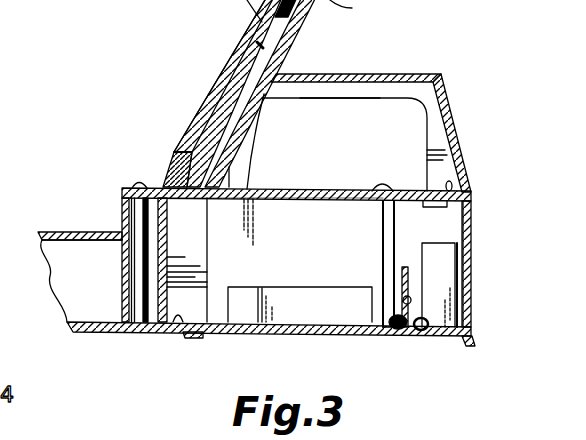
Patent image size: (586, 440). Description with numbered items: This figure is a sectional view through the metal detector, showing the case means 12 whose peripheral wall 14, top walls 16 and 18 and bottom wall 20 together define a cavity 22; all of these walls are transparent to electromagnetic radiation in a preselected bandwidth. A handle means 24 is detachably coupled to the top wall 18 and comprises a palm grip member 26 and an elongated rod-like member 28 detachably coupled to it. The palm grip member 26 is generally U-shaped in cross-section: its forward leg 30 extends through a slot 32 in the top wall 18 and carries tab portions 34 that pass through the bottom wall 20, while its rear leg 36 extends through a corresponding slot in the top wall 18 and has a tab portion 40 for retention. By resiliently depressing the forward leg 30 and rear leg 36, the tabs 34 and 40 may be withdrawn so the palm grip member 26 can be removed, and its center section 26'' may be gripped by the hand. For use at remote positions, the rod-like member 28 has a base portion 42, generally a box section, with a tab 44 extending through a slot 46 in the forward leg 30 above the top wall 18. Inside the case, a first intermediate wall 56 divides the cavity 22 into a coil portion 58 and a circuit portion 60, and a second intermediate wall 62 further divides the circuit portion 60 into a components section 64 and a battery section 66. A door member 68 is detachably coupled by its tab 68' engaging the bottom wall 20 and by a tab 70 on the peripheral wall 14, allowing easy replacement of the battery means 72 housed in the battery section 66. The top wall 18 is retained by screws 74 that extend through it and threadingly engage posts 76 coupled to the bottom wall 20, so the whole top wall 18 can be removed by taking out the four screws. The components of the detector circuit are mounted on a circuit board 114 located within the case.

The case means 12 is at (120, 192).
The peripheral wall 14 is at (511, 276).
The top wall 16 is at (50, 231).
The top wall 18 is at (284, 189).
The bottom wall 20 is at (317, 336).
The cavity 22 is at (98, 269).
The handle means 24 is at (228, 79).
The palm grip member 26 is at (355, 95).
The center section 26'' is at (355, 65).
The elongated rod-like member 28 is at (284, 60).
The forward leg 30 is at (207, 256).
The slot 32 is at (140, 184).
The tab portions 34 is at (188, 338).
The rear leg 36 is at (450, 115).
The tab portion 40 is at (445, 208).
The base portion 42 is at (260, 46).
The tab 44 is at (170, 183).
The slot 46 is at (182, 151).
The first intermediate wall 56 is at (122, 222).
The coil portion 58 is at (110, 299).
The circuit portion 60 is at (320, 232).
The second intermediate wall 62 is at (392, 333).
The components section 64 is at (360, 274).
The battery section 66 is at (512, 219).
The door member 68 is at (422, 356).
The tab 68' is at (407, 322).
The tab 70 is at (468, 347).
The battery means 72 is at (453, 279).
The screws 74 is at (140, 183).
The posts 76 is at (144, 333).
The circuit board 114 is at (255, 286).